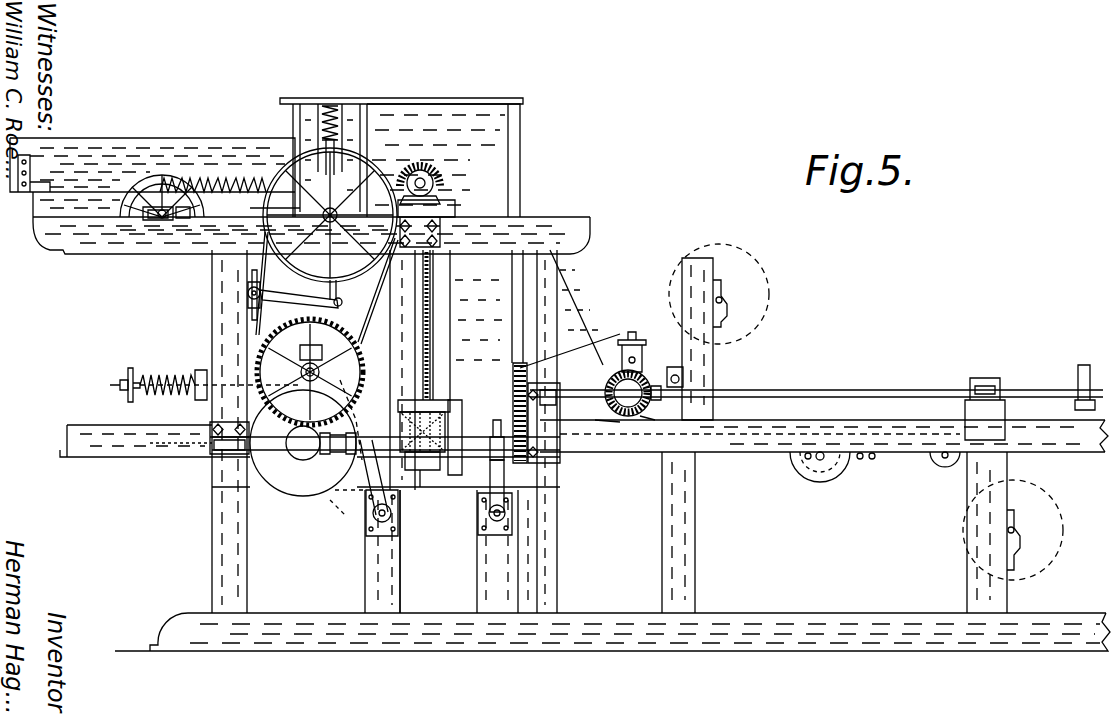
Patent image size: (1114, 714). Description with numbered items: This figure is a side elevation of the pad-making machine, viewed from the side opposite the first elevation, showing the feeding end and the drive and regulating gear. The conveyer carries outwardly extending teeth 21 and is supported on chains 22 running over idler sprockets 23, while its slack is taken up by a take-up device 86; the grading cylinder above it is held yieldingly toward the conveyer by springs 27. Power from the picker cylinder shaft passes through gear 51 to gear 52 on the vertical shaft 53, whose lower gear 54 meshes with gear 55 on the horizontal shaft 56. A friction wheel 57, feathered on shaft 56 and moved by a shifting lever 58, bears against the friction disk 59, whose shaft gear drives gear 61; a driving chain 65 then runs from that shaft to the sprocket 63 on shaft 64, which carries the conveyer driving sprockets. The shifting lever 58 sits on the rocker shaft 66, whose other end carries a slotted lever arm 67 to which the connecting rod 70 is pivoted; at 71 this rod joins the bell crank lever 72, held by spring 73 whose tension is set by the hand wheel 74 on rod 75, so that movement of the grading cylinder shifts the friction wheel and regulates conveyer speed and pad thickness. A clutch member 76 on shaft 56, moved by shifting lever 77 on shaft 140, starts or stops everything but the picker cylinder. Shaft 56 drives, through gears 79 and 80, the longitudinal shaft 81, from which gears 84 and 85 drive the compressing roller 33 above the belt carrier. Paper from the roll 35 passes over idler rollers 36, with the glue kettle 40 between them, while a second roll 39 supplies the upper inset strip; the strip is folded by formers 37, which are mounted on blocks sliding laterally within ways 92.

The teeth 21 is at (164, 178).
The chain 22 is at (196, 180).
The sprockets 23 is at (194, 207).
The springs 27 is at (330, 110).
The roller 33 is at (620, 370).
The roll 35 is at (1060, 530).
The idler rollers 36 is at (945, 466).
The formers 37 is at (1084, 364).
The roll of paper 39 is at (768, 300).
The kettle or tank 40 is at (812, 480).
The gear 51 is at (427, 177).
The gear 52 is at (445, 200).
The vertical shaft 53 is at (432, 318).
The gear 54 is at (446, 412).
The gear 55 is at (456, 476).
The shaft 56 is at (512, 388).
The friction wheel 57 is at (362, 498).
The shifting lever 58 is at (401, 520).
The friction disk 59 is at (303, 443).
The gear 61 is at (240, 354).
The sprocket 63 is at (380, 186).
The shaft 64 is at (268, 208).
The driving chain 65 is at (246, 292).
The rocker shaft 66 is at (366, 520).
The lever arm 67 is at (332, 530).
The connecting rod 70 is at (346, 400).
The pivot 71 is at (327, 288).
The bell crank lever 72 is at (310, 368).
The spring 73 is at (166, 392).
The hand wheel 74 is at (130, 396).
The rod 75 is at (120, 386).
The friction clutch member 76 is at (506, 446).
The shifting lever 77 is at (506, 505).
The gear 79 is at (552, 450).
The gear 80 is at (545, 352).
The shaft 81 is at (838, 390).
The gear 84 is at (640, 344).
The gear 85 is at (684, 382).
The take-up device 86 is at (160, 222).
The ways 92 is at (1008, 402).
The shaft 140 is at (514, 520).